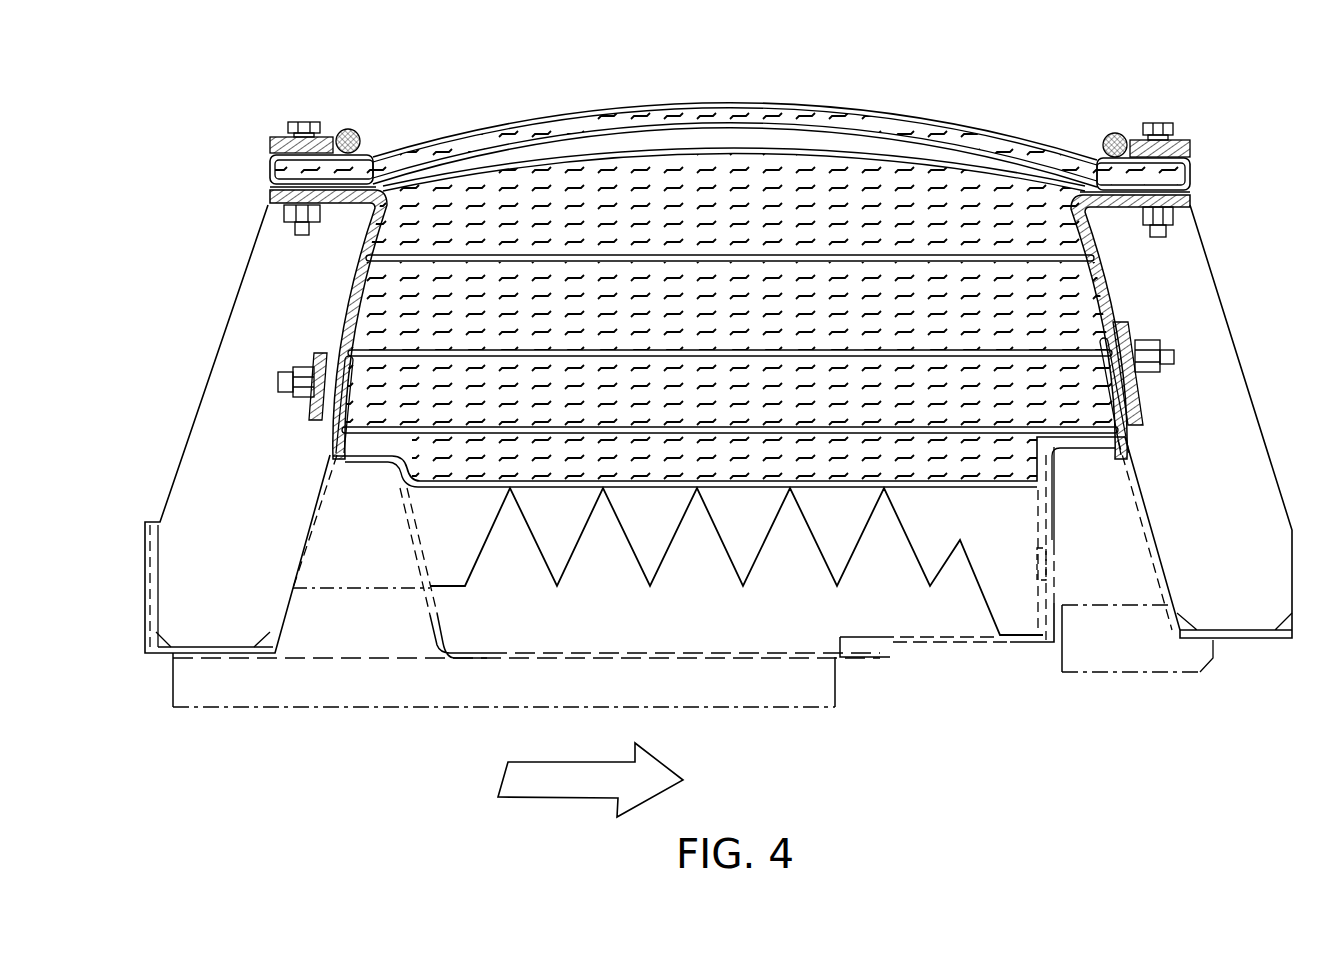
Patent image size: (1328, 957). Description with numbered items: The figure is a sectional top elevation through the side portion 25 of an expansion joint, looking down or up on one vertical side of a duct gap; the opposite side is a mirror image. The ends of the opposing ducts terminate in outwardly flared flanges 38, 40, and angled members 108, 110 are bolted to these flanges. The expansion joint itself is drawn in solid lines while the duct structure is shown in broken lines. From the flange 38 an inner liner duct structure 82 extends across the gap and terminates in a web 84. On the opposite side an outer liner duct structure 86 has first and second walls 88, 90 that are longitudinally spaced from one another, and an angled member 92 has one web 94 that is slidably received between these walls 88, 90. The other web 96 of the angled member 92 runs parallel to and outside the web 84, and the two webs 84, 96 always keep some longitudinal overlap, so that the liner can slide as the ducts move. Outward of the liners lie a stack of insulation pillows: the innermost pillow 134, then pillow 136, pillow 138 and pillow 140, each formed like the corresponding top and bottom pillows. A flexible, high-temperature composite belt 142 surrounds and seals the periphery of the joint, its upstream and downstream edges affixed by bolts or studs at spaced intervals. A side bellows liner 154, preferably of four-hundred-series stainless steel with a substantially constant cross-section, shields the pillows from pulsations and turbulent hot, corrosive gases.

The side portion 25 is at (708, 446).
The pillow 140 is at (452, 200).
The composite belt 142 is at (933, 134).
The pillow 138 is at (380, 288).
The angled member 108 is at (343, 308).
The angled member 110 is at (1113, 293).
The flange 38 is at (300, 522).
The flange 40 is at (1150, 499).
The first wall 88 is at (1067, 457).
The second wall 90 is at (1047, 507).
The web 94 is at (1037, 550).
The angled member 92 is at (1043, 627).
The innermost pillow 134 is at (637, 470).
The pillow 136 is at (724, 410).
The side bellows liner 154 is at (572, 562).
The inner liner duct structure 82 is at (437, 661).
The web 84 is at (707, 657).
The web 96 is at (947, 640).
The outer liner duct structure 86 is at (1015, 722).